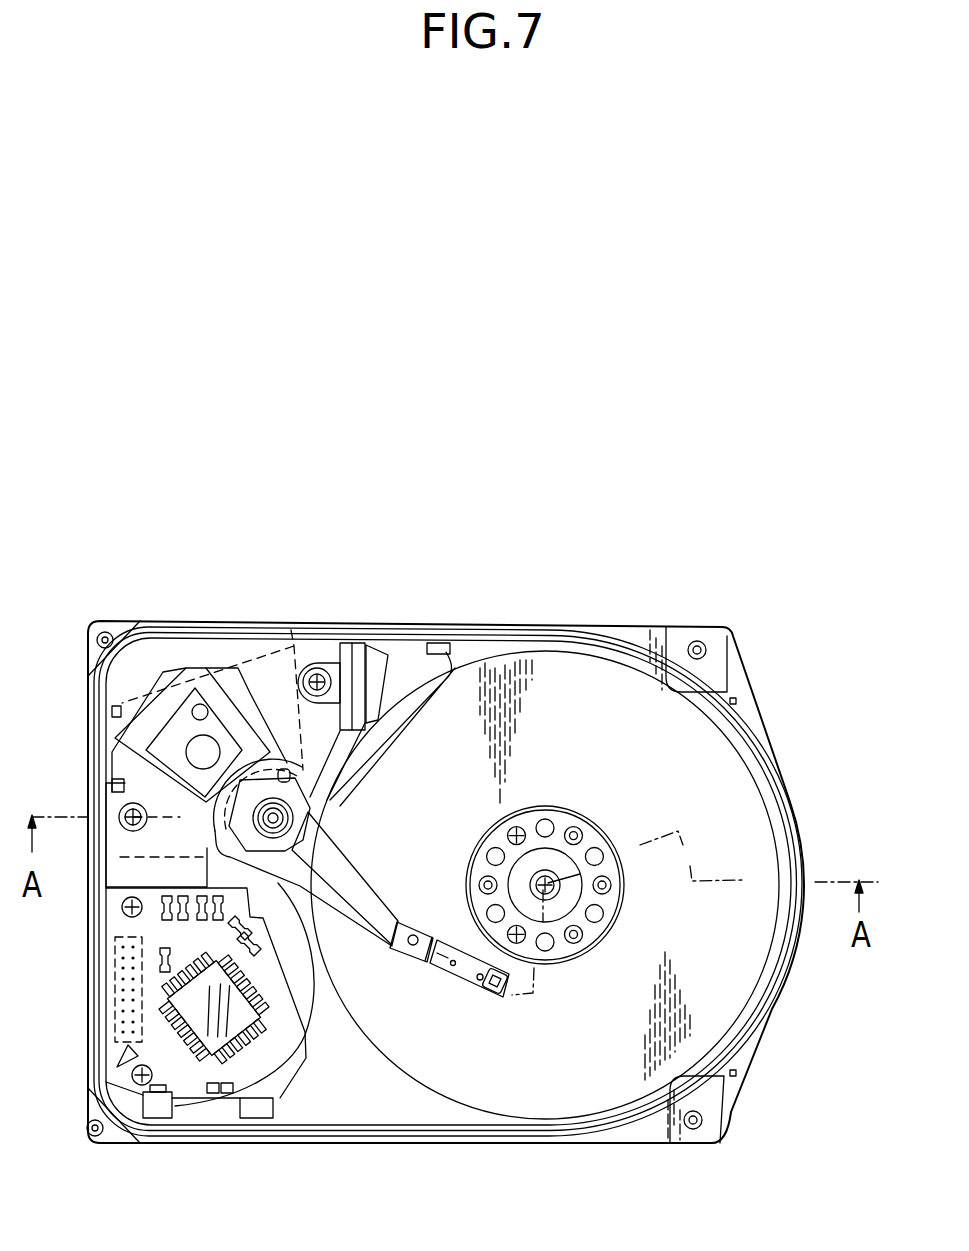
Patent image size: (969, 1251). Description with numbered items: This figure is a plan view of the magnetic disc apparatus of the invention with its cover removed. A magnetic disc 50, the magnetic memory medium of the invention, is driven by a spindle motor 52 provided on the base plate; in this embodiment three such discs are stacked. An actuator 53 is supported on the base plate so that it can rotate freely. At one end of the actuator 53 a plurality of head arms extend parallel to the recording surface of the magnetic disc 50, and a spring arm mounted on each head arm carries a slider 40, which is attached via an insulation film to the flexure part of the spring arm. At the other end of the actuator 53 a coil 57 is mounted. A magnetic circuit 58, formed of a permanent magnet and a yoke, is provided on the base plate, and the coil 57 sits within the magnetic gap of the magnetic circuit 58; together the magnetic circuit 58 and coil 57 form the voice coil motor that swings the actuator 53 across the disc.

The slider 40 is at (500, 998).
The magnetic disc 50 is at (720, 1013).
The spindle motor 52 is at (577, 975).
The actuator 53 is at (361, 845).
The coil 57 is at (191, 668).
The magnetic circuit 58 is at (291, 630).